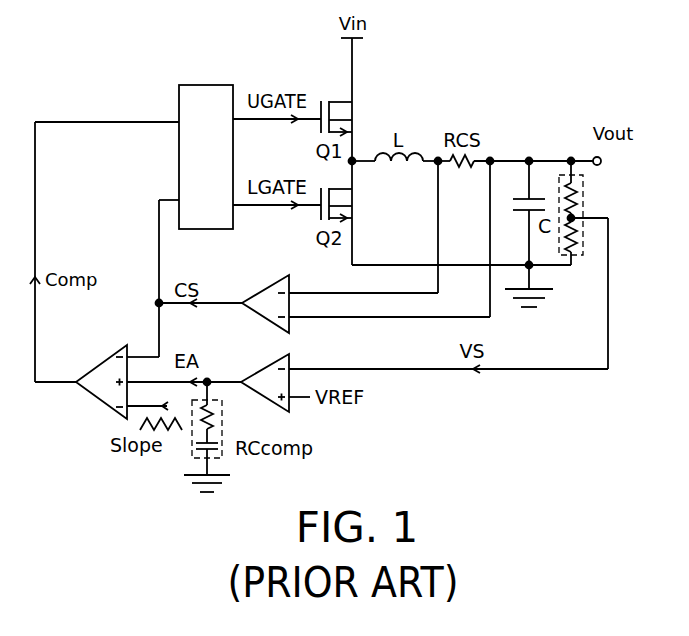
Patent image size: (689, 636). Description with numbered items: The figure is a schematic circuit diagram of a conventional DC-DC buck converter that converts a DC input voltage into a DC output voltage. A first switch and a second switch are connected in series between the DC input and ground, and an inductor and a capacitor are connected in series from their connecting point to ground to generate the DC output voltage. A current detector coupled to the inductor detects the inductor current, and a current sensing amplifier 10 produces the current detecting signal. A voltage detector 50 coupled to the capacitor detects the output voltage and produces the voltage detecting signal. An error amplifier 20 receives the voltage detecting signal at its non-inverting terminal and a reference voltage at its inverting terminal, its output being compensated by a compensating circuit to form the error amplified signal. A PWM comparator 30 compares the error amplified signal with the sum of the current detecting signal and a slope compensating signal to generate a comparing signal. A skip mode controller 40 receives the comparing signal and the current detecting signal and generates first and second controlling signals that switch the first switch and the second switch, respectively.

The current sensing amplifier 10 is at (255, 299).
The error amplifier 20 is at (258, 374).
The pulse width modulated (PWM) comparator 30 is at (90, 375).
The skip mode controller 40 is at (206, 157).
The voltage detector 50 is at (583, 207).